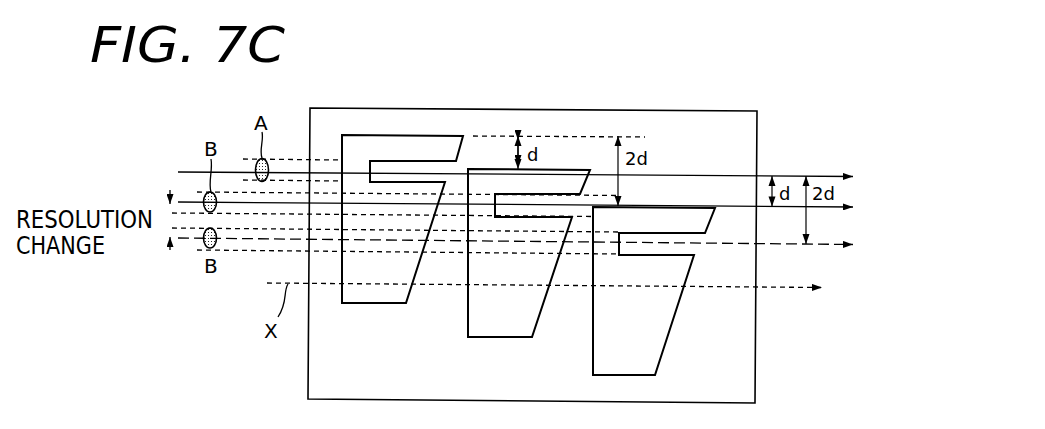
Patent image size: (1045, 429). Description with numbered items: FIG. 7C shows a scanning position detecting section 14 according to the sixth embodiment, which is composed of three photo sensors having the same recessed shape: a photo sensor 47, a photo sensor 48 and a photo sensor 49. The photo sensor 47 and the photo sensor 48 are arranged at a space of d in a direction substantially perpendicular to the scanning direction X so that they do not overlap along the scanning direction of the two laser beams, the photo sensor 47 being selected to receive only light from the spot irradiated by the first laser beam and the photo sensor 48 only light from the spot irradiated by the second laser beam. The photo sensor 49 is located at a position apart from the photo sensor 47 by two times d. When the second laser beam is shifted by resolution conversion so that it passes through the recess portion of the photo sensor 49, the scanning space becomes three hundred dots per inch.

The scanning position detecting section 14 is at (683, 108).
The photo sensor 47 is at (365, 306).
The photo sensor 48 is at (466, 314).
The photo sensor 49 is at (592, 350).